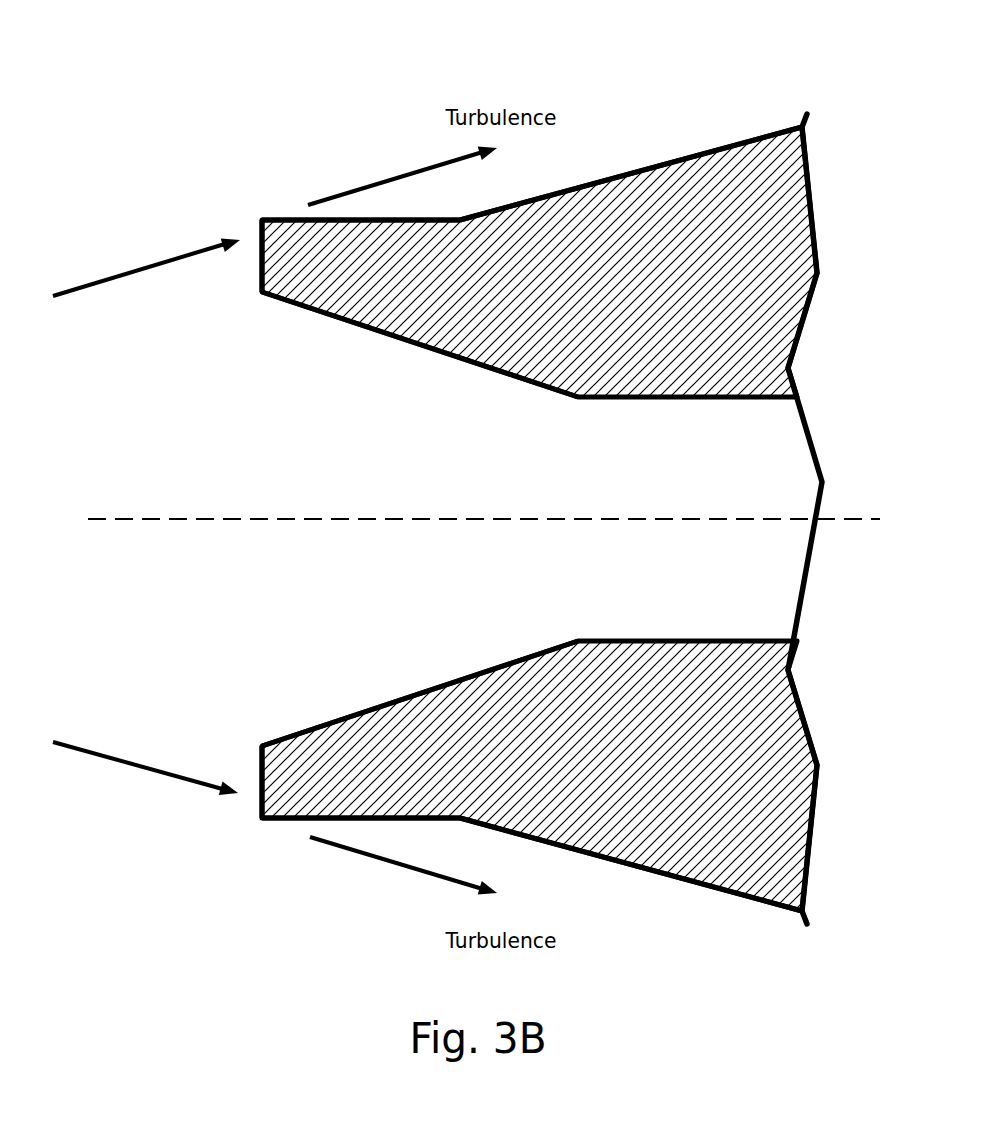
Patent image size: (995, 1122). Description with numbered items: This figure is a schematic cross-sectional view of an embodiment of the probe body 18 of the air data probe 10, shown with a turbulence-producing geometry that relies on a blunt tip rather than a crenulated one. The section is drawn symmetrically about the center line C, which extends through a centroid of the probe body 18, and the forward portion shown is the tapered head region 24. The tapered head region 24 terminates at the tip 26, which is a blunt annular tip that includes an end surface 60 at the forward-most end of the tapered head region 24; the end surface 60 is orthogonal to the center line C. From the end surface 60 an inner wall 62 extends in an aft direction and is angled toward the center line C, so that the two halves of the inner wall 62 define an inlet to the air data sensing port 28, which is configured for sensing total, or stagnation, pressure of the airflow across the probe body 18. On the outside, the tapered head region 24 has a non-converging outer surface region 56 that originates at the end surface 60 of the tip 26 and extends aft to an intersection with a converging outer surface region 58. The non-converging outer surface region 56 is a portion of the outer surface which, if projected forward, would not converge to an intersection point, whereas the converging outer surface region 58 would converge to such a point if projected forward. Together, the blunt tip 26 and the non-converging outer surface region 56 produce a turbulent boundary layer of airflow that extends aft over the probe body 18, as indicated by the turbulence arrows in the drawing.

The air data probe 10 is at (194, 80).
The probe body 18 is at (785, 113).
The tapered head region 24 is at (736, 125).
The tip 26 is at (245, 286).
The air data sensing port 28 is at (636, 549).
The non-converging outer surface region 56 is at (289, 208).
The converging outer surface region 58 is at (653, 156).
The end surface 60 is at (258, 248).
The inner wall 62 is at (447, 353).
The center line C is at (205, 519).